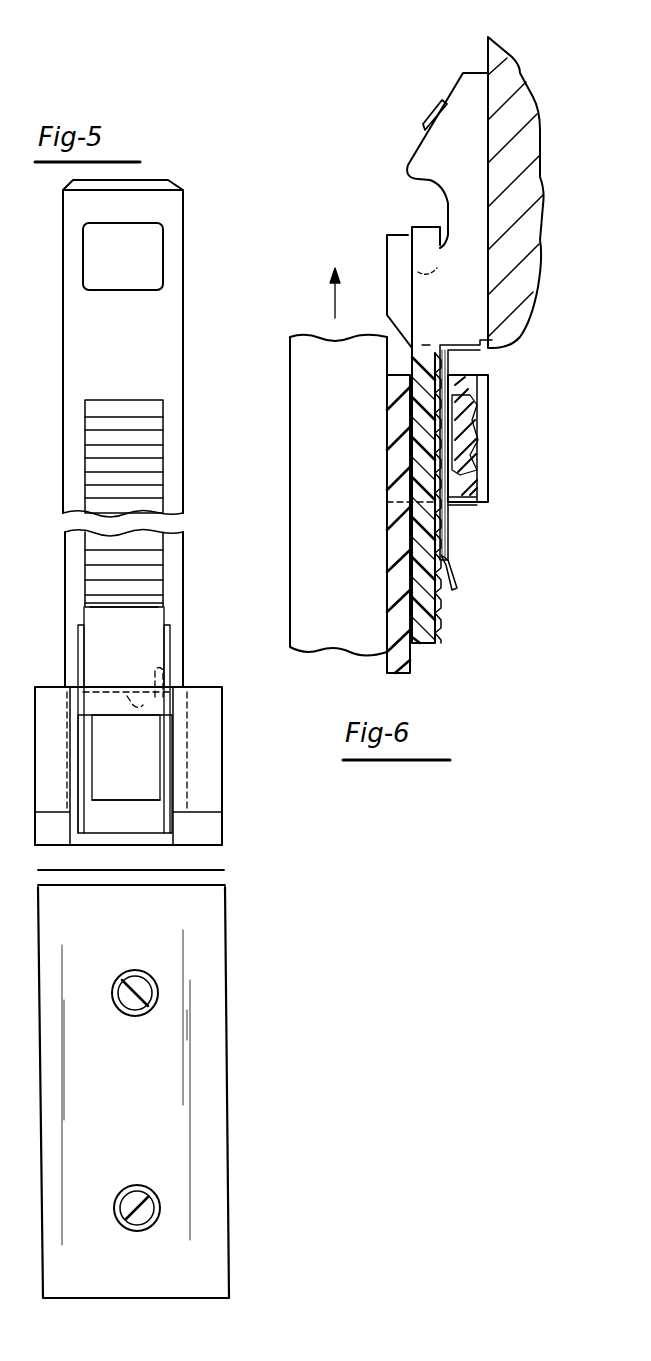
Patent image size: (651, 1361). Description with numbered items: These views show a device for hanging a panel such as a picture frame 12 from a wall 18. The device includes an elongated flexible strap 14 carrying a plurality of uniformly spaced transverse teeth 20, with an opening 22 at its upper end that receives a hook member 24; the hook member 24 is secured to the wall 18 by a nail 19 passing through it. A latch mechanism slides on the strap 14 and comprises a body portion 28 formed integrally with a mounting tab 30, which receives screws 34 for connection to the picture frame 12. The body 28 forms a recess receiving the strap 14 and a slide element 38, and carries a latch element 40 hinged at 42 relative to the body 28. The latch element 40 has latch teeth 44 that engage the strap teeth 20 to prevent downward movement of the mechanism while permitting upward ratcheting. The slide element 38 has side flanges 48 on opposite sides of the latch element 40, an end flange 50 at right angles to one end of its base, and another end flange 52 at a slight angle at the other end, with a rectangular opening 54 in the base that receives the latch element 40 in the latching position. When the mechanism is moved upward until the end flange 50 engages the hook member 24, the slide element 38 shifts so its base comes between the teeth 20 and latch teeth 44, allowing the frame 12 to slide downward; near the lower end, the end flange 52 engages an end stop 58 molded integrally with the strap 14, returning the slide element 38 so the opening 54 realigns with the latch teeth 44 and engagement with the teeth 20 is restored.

In FIG. 6, the picture frame 12 is at (292, 462).
In FIG. 5, the strap element 14 is at (163, 365).
In FIG. 6, the strap element 14 is at (426, 435).
In FIG. 6, the wall 18 is at (519, 120).
In FIG. 6, the nail 19 is at (430, 112).
In FIG. 5, the teeth 20 is at (133, 445).
In FIG. 6, the teeth 20 is at (437, 607).
In FIG. 5, the opening 22 is at (153, 251).
In FIG. 6, the hook member 24 is at (387, 236).
In FIG. 5, the body portion 28 is at (212, 757).
In FIG. 5, the mounting tab 30 is at (197, 1058).
In FIG. 5, the screws 34 is at (143, 985).
In FIG. 6, the slide element 38 is at (478, 380).
In FIG. 6, the latch element 40 is at (452, 460).
In FIG. 6, the hinge 42 is at (455, 445).
In FIG. 6, the latch teeth 44 is at (448, 515).
In FIG. 5, the side flanges 48 is at (80, 633).
In FIG. 5, the end flange 50 is at (130, 618).
In FIG. 5, the end flange 52 is at (158, 842).
In FIG. 6, the end flange 52 is at (445, 572).
In FIG. 5, the rectangular opening 54 is at (173, 700).
In FIG. 5, the end stop 58 is at (215, 856).